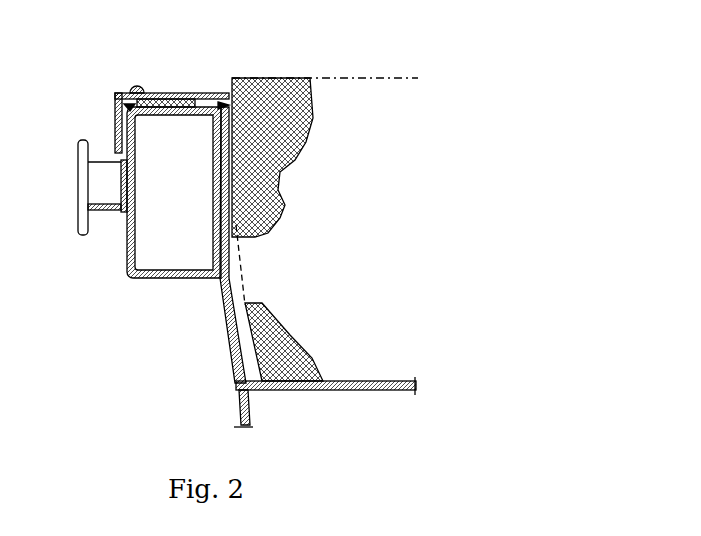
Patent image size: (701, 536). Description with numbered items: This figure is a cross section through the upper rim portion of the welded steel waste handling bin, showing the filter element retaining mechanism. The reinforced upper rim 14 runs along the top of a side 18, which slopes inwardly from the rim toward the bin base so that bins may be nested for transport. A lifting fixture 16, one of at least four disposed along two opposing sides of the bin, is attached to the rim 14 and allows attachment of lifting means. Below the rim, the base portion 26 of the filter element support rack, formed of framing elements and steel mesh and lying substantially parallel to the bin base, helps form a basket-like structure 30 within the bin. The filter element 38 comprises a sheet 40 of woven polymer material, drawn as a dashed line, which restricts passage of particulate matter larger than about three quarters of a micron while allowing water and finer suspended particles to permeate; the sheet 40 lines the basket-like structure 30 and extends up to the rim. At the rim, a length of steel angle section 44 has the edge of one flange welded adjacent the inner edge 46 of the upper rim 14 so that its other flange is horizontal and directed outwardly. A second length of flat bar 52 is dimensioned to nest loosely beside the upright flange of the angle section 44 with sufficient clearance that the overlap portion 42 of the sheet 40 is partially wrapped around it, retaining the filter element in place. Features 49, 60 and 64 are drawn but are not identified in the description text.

The upper rim 14 is at (128, 274).
The lifting fixture 16 is at (74, 203).
The side 18 is at (234, 357).
The base portion 26 is at (362, 391).
The basket-like structure 30 is at (454, 91).
The filter element 38 is at (404, 234).
The sheet 40 is at (240, 241).
The overlap portion 42 is at (176, 58).
The steel angle section 44 is at (220, 102).
The inner edge 46 is at (247, 84).
The fastener head 49 is at (136, 90).
The flat bar 52 is at (162, 99).
The clip 60 is at (124, 104).
The clip leg 64 is at (112, 134).